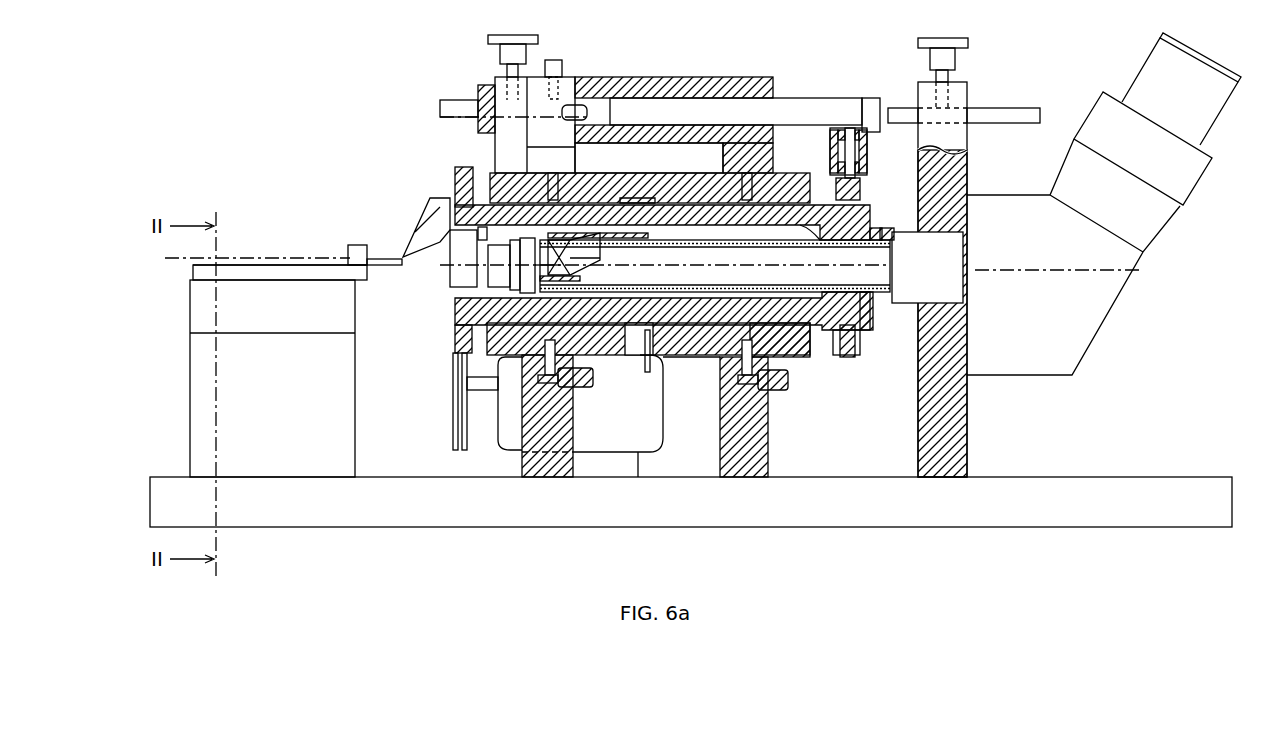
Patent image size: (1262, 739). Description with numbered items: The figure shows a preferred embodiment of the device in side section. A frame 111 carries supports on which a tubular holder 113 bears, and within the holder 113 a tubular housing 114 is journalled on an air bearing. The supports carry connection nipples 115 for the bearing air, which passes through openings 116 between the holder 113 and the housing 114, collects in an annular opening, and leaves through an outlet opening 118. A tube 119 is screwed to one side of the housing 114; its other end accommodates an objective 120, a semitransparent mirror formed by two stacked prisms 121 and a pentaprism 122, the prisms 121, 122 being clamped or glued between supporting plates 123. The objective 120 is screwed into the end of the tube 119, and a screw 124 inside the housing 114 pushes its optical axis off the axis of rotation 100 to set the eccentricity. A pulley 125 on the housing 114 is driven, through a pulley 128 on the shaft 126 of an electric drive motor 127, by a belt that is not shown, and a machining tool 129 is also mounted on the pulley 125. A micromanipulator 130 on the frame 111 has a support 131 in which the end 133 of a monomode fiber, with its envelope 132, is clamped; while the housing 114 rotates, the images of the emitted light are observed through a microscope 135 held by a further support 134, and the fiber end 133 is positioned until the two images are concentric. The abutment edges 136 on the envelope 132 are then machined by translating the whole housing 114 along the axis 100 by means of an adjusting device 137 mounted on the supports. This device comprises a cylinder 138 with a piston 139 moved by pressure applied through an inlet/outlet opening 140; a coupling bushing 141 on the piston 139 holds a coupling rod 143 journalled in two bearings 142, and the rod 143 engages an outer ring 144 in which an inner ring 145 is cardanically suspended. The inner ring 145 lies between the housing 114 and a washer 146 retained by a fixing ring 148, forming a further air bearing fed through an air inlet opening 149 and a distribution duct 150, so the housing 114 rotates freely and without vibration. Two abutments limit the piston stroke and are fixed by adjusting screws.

The axis of rotation 100 is at (680, 262).
The frame 111 is at (748, 516).
The tubular holder 113 is at (800, 345).
The tubular housing 114 is at (688, 345).
The connection nipples 115 is at (590, 385).
The openings 116 is at (578, 203).
The outlet opening 118 is at (648, 365).
The tube 119 is at (832, 250).
The objective 120 is at (458, 278).
The prisms 121 is at (612, 268).
The pentaprism 122 is at (598, 245).
The supporting plates 123 is at (580, 262).
The screw 124 is at (456, 252).
The pulley 125 is at (456, 345).
The shaft 126 is at (468, 440).
The electric drive motor 127 is at (508, 445).
The pulley 128 is at (458, 412).
The machining tool 129 is at (420, 233).
The micromanipulator 130 is at (208, 396).
The support 131 is at (290, 275).
The envelope 132 is at (392, 265).
The end 133 is at (243, 258).
The further support 134 is at (950, 400).
The microscope 135 is at (1105, 285).
The abutment edges 136 is at (393, 260).
The adjusting device 137 is at (727, 79).
The cylinder 138 is at (650, 88).
The piston 139 is at (750, 115).
The inlet/outlet opening 140 is at (556, 60).
The coupling bushing 141 is at (830, 150).
The bearings 142 is at (855, 128).
The coupling rod 143 is at (850, 152).
The outer ring 144 is at (860, 190).
The inner ring 145 is at (866, 243).
The washer 146 is at (893, 268).
The fixing ring 148 is at (895, 232).
The air inlet opening 149 is at (848, 357).
The distribution duct 150 is at (815, 230).